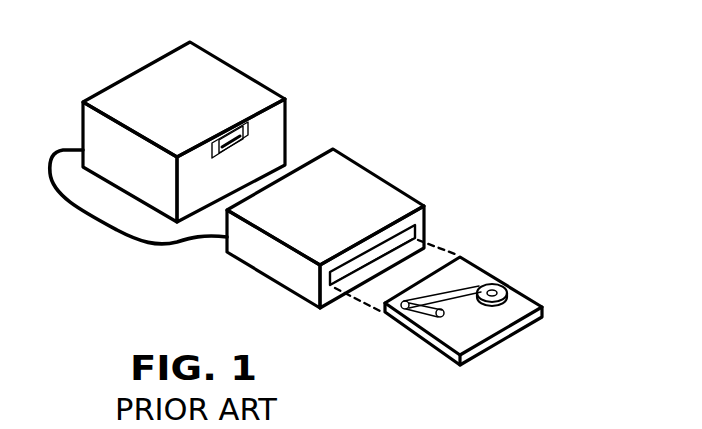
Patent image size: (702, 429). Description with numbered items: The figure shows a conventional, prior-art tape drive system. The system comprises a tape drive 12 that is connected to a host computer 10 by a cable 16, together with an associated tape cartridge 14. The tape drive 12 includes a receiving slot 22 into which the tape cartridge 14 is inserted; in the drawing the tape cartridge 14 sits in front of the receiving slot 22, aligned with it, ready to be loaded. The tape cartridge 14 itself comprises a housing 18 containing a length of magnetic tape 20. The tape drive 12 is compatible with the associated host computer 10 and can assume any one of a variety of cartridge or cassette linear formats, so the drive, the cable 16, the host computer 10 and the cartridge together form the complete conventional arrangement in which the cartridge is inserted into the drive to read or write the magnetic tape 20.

The host computer 10 is at (259, 69).
The tape drive 12 is at (398, 169).
The tape cartridge 14 is at (474, 296).
The cable 16 is at (115, 233).
The housing 18 is at (505, 332).
The magnetic tape 20 is at (458, 297).
The receiving slot 22 is at (399, 245).